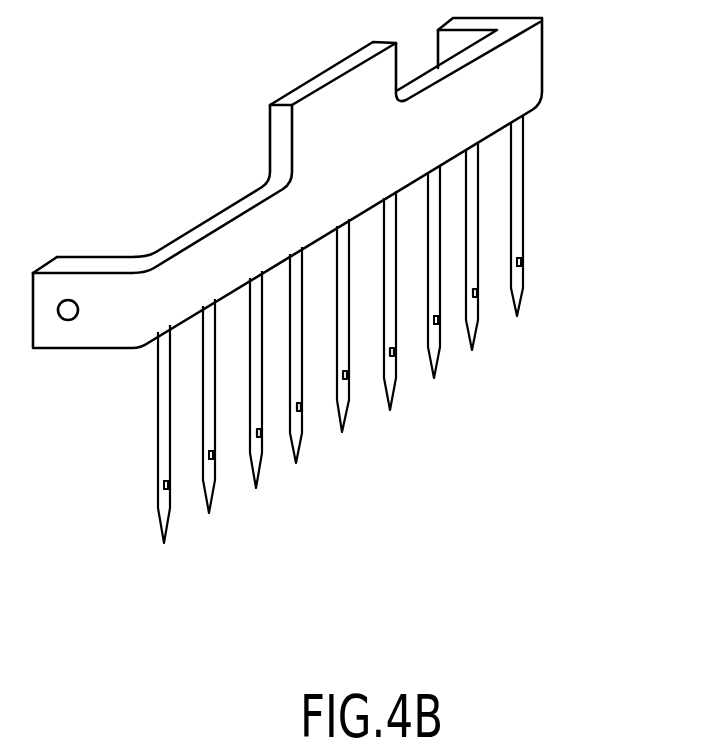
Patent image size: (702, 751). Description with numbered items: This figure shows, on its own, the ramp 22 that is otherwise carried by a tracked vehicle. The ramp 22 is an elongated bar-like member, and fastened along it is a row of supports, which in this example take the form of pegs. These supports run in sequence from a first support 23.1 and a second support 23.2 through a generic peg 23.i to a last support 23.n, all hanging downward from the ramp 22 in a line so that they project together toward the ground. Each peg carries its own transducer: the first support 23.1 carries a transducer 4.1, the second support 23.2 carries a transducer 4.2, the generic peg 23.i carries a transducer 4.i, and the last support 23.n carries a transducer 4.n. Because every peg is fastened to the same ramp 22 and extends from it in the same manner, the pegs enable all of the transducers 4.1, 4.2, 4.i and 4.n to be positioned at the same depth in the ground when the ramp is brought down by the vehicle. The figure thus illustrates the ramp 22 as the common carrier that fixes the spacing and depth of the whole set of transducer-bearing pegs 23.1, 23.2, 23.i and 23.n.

The ramp 22 is at (523, 67).
The support 23.1 is at (168, 438).
The support 23.2 is at (207, 468).
The peg 23.i is at (430, 305).
The support 23.n is at (523, 205).
The transducer 4.1 is at (167, 492).
The transducer 4.2 is at (213, 457).
The transducer 4.i is at (438, 320).
The transducer 4.n is at (523, 262).